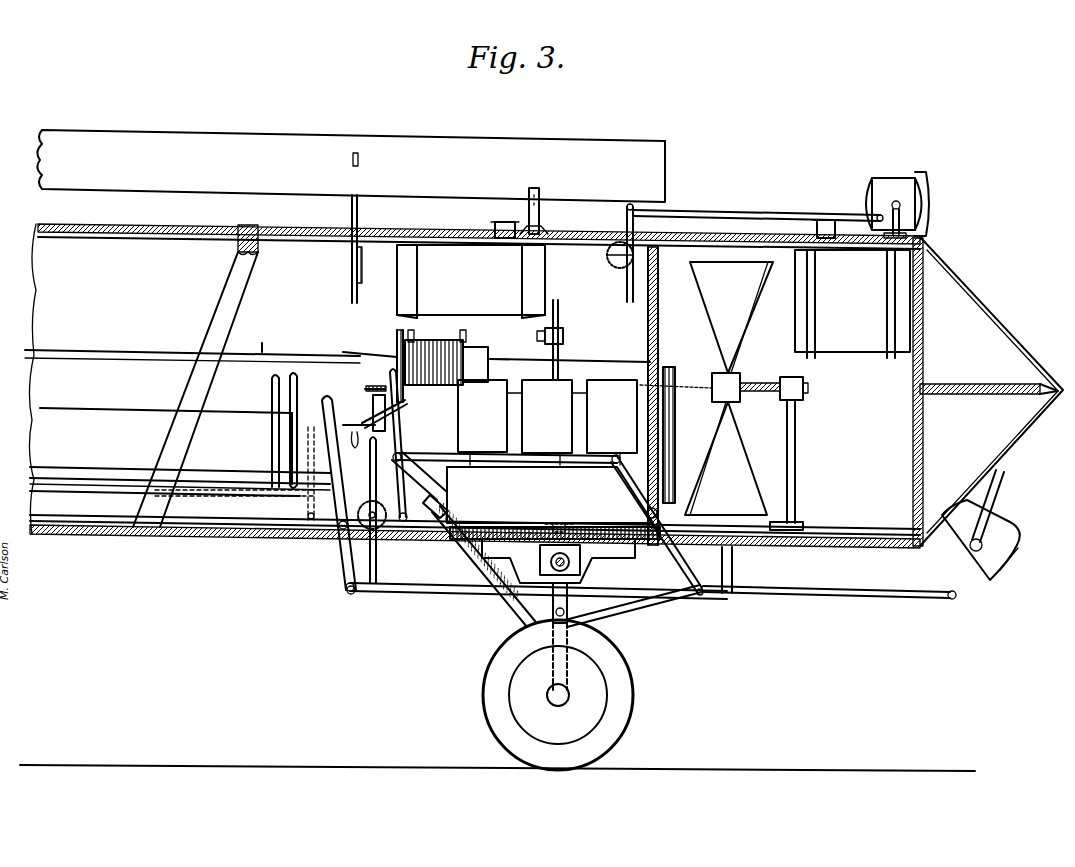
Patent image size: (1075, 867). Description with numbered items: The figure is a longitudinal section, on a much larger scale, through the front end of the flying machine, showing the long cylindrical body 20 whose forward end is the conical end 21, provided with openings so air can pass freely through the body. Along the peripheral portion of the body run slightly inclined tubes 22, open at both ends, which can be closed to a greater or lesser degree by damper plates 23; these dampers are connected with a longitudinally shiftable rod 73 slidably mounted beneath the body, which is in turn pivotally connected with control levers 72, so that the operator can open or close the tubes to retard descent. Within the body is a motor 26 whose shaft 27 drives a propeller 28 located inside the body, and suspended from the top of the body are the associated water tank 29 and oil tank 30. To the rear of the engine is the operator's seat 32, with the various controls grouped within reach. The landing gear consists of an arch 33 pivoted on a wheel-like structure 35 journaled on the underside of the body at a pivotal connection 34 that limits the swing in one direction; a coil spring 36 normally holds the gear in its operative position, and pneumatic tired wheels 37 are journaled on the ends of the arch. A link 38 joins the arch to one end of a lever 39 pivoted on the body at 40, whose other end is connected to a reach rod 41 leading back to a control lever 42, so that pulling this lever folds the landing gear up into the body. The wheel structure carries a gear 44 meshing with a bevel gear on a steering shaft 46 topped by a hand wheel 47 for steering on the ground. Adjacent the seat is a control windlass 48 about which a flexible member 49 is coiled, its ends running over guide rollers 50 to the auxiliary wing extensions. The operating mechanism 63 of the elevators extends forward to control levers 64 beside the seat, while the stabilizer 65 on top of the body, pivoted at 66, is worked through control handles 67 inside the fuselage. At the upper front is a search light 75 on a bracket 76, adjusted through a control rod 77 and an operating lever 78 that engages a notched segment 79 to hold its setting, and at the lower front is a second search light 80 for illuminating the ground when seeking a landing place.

The body 20 is at (106, 533).
The conical end 21 is at (986, 322).
The tubes 22 is at (230, 300).
The damper plates 23 is at (162, 470).
The motors 26 is at (547, 422).
The shafts 27 is at (680, 480).
The propellers 28 is at (722, 328).
The water tank 29 is at (852, 289).
The oil tank 30 is at (471, 281).
The seat 32 is at (283, 461).
The arch 33 is at (576, 565).
The pivotal connection 34 is at (565, 528).
The wheel-like structure 35 is at (508, 535).
The coil spring 36 is at (520, 615).
The pneumatic tired wheels 37 is at (614, 728).
The link 38 is at (612, 610).
The lever 39 is at (740, 596).
The pivot 40 is at (660, 512).
The reach rod 41 is at (556, 461).
The control lever 42 is at (322, 553).
The gear 44 is at (410, 598).
The steering shaft 46 is at (410, 478).
The hand wheel 47 is at (408, 401).
The control windlass 48 is at (405, 353).
The flexible member 49 is at (455, 355).
The guide rollers 50 is at (462, 345).
The operating mechanism 63 is at (68, 407).
The control levers 64 is at (307, 350).
The stabilizer 65 is at (149, 136).
The pivot 66 is at (565, 206).
The control handles 67 is at (351, 283).
The control levers 72 is at (312, 440).
The longitudinally shiftable rod 73 is at (205, 530).
The search light 75 is at (897, 183).
The bracket 76 is at (895, 205).
The control rod 77 is at (750, 212).
The operating lever 78 is at (627, 297).
The notched segment 79 is at (612, 257).
The search light 80 is at (987, 566).